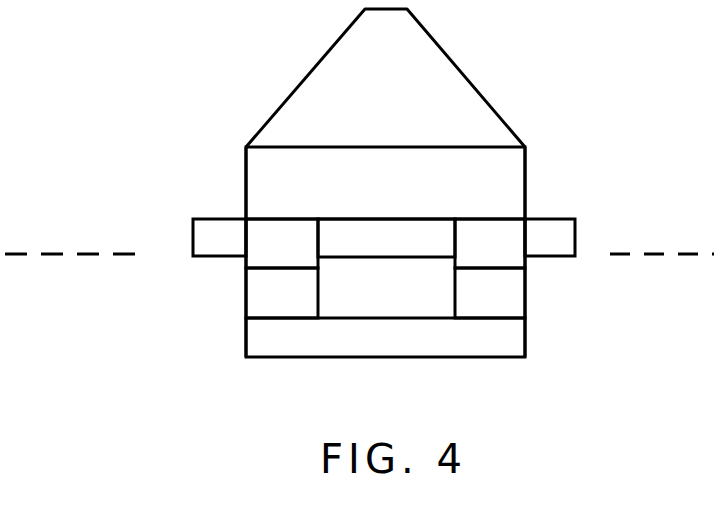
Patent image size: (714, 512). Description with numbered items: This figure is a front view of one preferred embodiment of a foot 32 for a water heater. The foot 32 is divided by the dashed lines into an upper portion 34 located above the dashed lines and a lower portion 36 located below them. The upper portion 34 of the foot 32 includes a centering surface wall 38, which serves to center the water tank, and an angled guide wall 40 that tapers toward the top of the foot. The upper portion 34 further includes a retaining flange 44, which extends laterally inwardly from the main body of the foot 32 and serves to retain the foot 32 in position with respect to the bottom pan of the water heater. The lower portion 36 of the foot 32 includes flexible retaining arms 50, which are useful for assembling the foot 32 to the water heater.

The foot 32 is at (147, 84).
The upper portion 34 is at (232, 171).
The lower portion 36 is at (234, 338).
The centering surface wall 38 is at (377, 198).
The angled guide wall 40 is at (363, 102).
The retaining flange 44 is at (360, 247).
The flexible retaining arms 50 is at (292, 301).